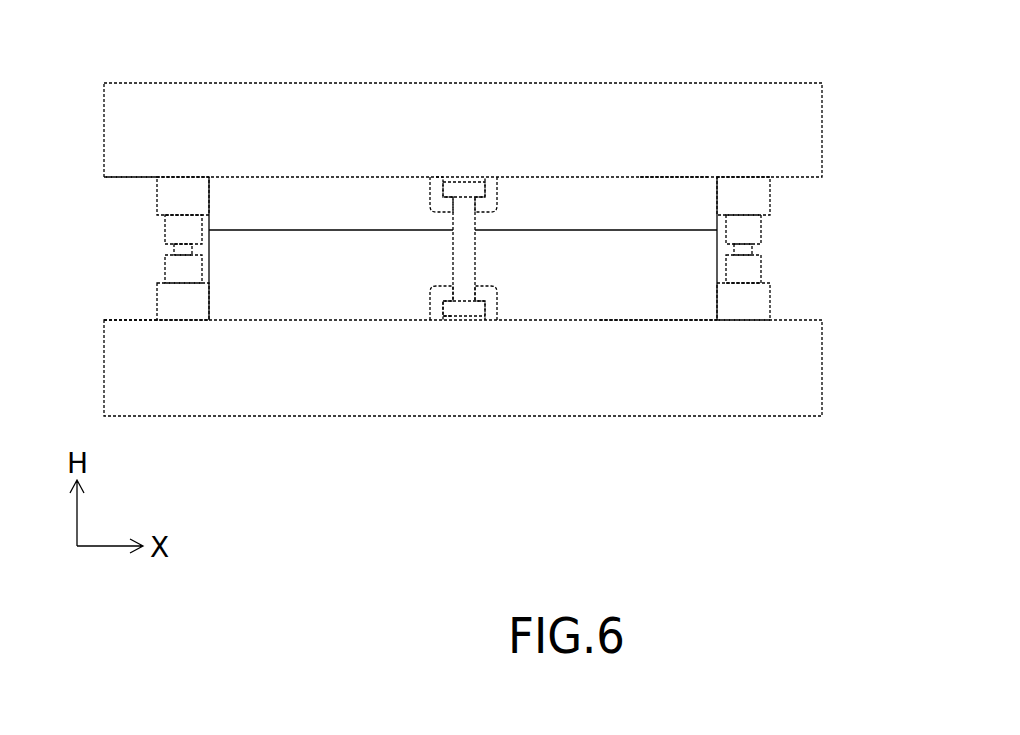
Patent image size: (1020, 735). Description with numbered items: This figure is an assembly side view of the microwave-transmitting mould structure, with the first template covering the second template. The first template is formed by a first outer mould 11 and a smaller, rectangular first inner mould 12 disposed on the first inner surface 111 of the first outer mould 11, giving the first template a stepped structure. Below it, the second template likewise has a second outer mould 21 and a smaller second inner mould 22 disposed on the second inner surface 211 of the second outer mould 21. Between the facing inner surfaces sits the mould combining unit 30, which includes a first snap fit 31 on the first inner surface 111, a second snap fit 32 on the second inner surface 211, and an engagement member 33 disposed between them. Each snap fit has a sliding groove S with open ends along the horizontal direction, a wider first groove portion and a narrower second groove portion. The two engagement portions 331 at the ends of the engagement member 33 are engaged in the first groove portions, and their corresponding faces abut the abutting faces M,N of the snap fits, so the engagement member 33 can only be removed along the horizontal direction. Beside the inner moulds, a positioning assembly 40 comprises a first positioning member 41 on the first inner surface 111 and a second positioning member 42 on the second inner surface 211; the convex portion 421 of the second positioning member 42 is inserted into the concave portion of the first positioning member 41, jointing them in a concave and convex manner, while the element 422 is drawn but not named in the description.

The first outer mould 11 is at (181, 103).
The first inner mould 12 is at (664, 197).
The first inner surface 111 is at (130, 180).
The second outer mould 21 is at (783, 400).
The second inner mould 22 is at (652, 290).
The second inner surface 211 is at (130, 320).
The mould combining unit 30 is at (461, 268).
The first snap fit 31 is at (492, 193).
The second snap fit 32 is at (488, 301).
The engagement member 33 is at (476, 248).
The engagement portion 331 is at (465, 190).
The sliding groove S is at (438, 185).
The abutting face and corresponding face M,N is at (447, 320).
The positioning assembly 40 is at (825, 248).
The first positioning member 41 is at (748, 194).
The second positioning member 42 is at (797, 300).
The convex portion 421 is at (747, 270).
The upper support member 422 is at (747, 232).